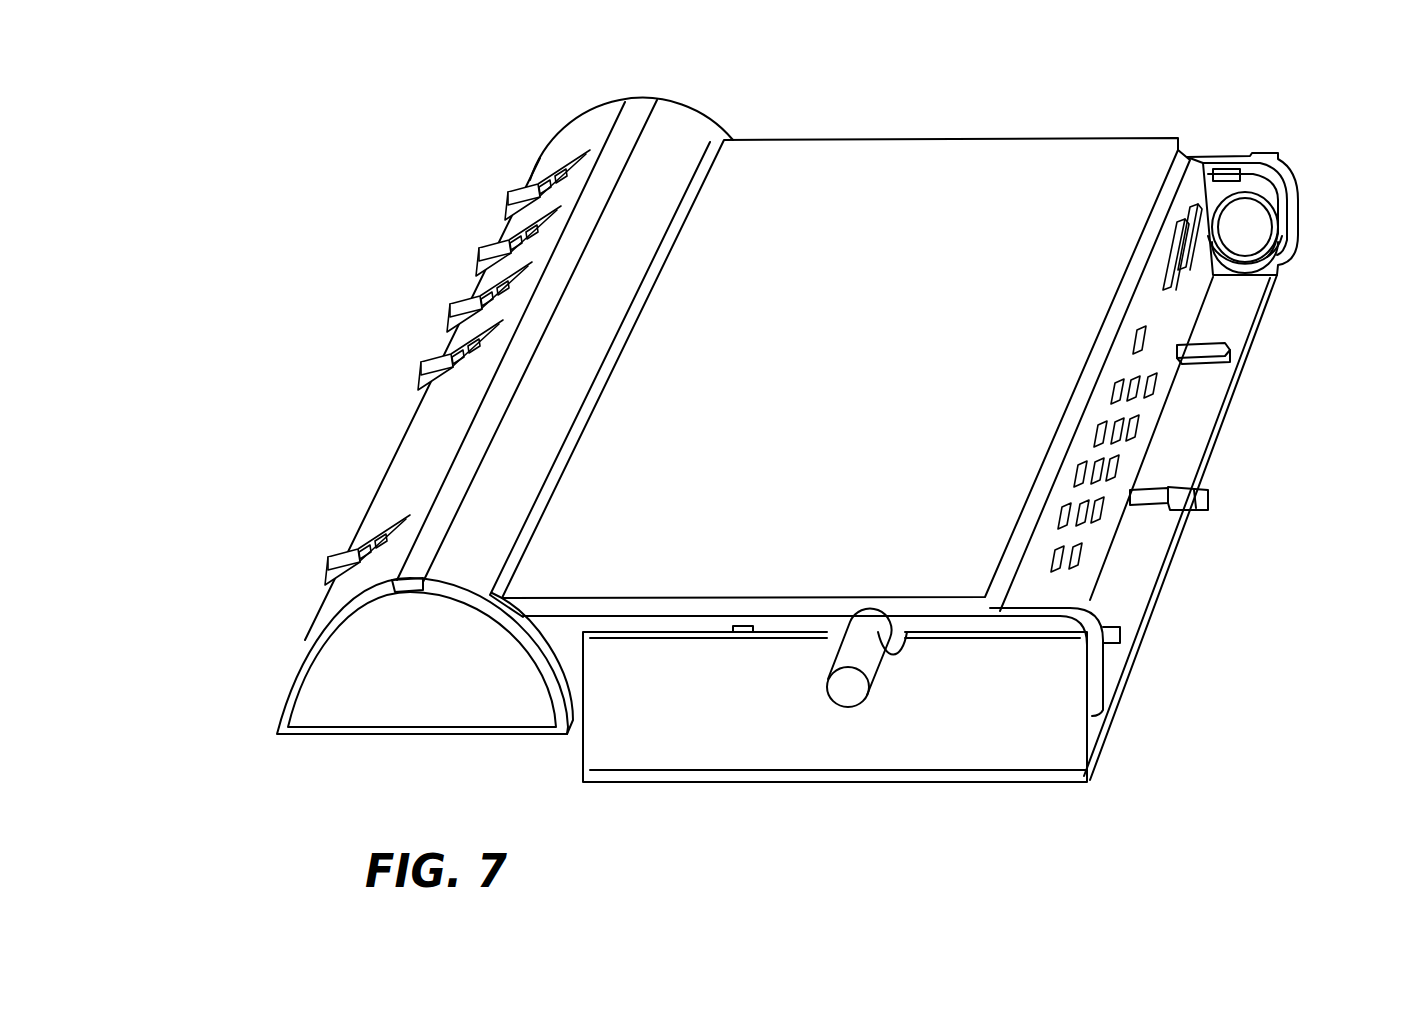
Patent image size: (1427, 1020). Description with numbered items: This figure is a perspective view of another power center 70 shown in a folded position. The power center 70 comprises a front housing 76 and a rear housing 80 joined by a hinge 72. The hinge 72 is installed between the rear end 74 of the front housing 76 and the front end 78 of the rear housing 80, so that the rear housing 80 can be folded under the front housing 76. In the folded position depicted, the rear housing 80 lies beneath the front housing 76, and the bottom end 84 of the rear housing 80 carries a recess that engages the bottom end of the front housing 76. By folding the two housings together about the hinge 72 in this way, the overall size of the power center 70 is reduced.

The power center 70 is at (387, 106).
The hinge 72 is at (1254, 224).
The rear end of the front housing 74 is at (1176, 326).
The front housing 76 is at (927, 157).
The front end of the rear housing 78 is at (1154, 609).
The rear housing 80 is at (997, 748).
The bottom end of the rear housing 84 is at (1204, 428).